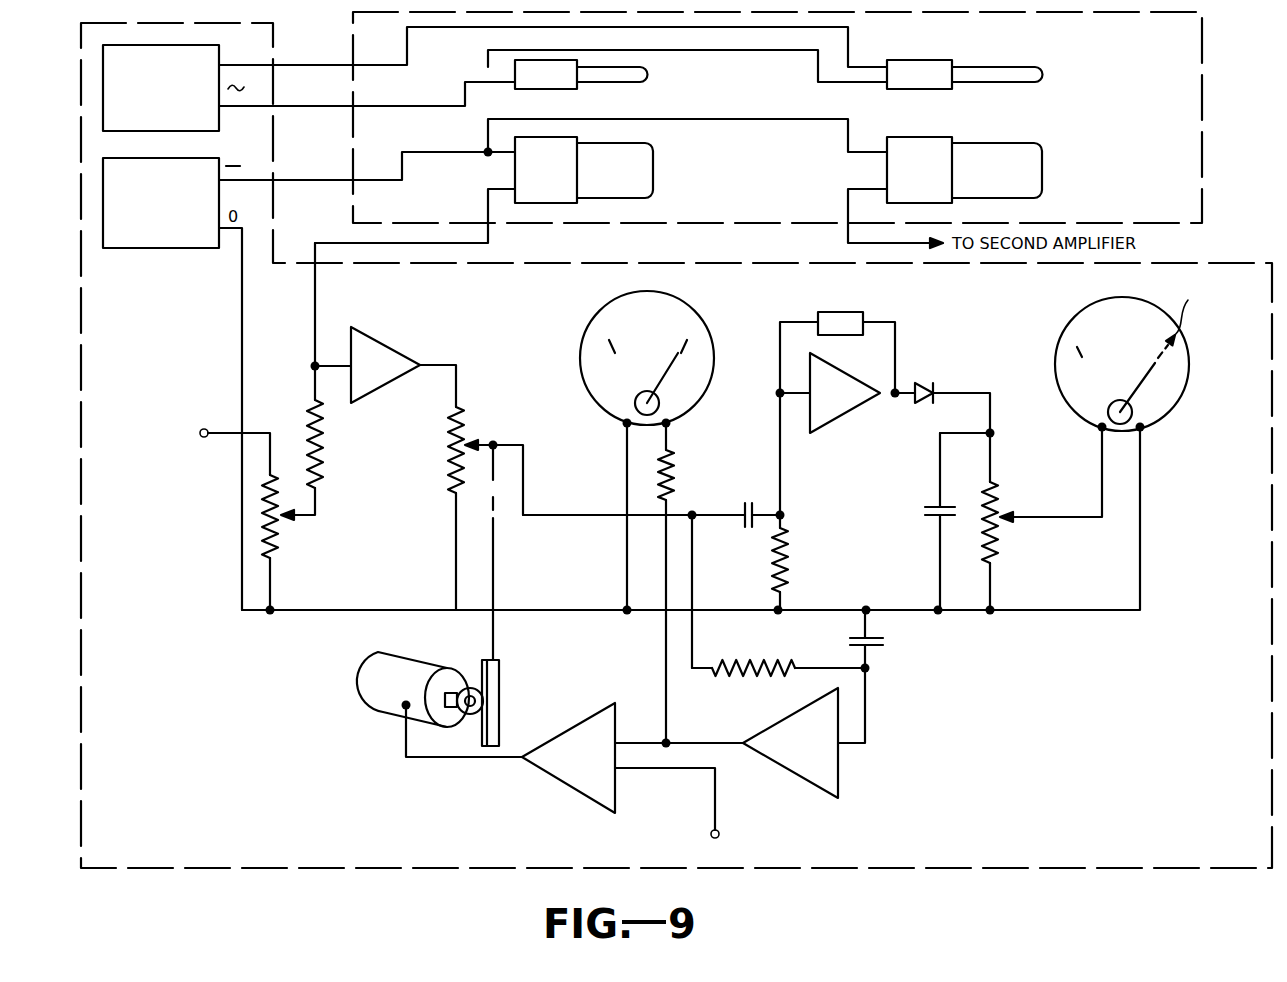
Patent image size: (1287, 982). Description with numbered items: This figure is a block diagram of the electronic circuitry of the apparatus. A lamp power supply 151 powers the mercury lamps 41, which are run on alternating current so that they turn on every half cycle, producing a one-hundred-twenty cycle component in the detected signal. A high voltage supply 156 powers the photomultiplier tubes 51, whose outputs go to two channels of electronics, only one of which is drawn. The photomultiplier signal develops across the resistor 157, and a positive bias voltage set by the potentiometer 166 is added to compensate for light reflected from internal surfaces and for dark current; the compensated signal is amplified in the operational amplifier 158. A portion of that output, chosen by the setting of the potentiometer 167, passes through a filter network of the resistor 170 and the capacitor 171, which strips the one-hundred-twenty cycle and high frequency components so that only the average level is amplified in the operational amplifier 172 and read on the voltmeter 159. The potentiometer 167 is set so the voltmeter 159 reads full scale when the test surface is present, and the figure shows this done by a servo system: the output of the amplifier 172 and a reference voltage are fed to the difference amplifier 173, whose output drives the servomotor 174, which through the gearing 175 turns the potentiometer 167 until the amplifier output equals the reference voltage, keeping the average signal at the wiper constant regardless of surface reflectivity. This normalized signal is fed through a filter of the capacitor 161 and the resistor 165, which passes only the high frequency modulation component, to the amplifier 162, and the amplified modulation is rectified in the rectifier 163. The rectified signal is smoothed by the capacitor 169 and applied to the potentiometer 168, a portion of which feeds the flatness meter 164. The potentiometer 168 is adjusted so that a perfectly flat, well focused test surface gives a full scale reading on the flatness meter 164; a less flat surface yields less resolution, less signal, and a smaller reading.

The lamp 41 is at (647, 72).
The photomultiplier tube 51 is at (645, 165).
The lamp power supply 151 is at (213, 118).
The high voltage supply 156 is at (150, 248).
The resistor 157 is at (322, 452).
The operational amplifier 158 is at (385, 352).
The voltmeter 159 is at (685, 315).
The capacitor 161 is at (733, 510).
The amplifier 162 is at (833, 415).
The rectifier 163 is at (925, 383).
The flatness meter 164 is at (1085, 318).
The resistor 165 is at (790, 552).
The potentiometer 166 is at (280, 540).
The potentiometer 167 is at (465, 418).
The potentiometer 168 is at (998, 505).
The capacitor 169 is at (930, 497).
The resistor 170 is at (773, 657).
The capacitor 171 is at (880, 650).
The operational amplifier 172 is at (828, 782).
The difference amplifier 173 is at (557, 770).
The servomotor 174 is at (382, 707).
The gearing 175 is at (500, 685).